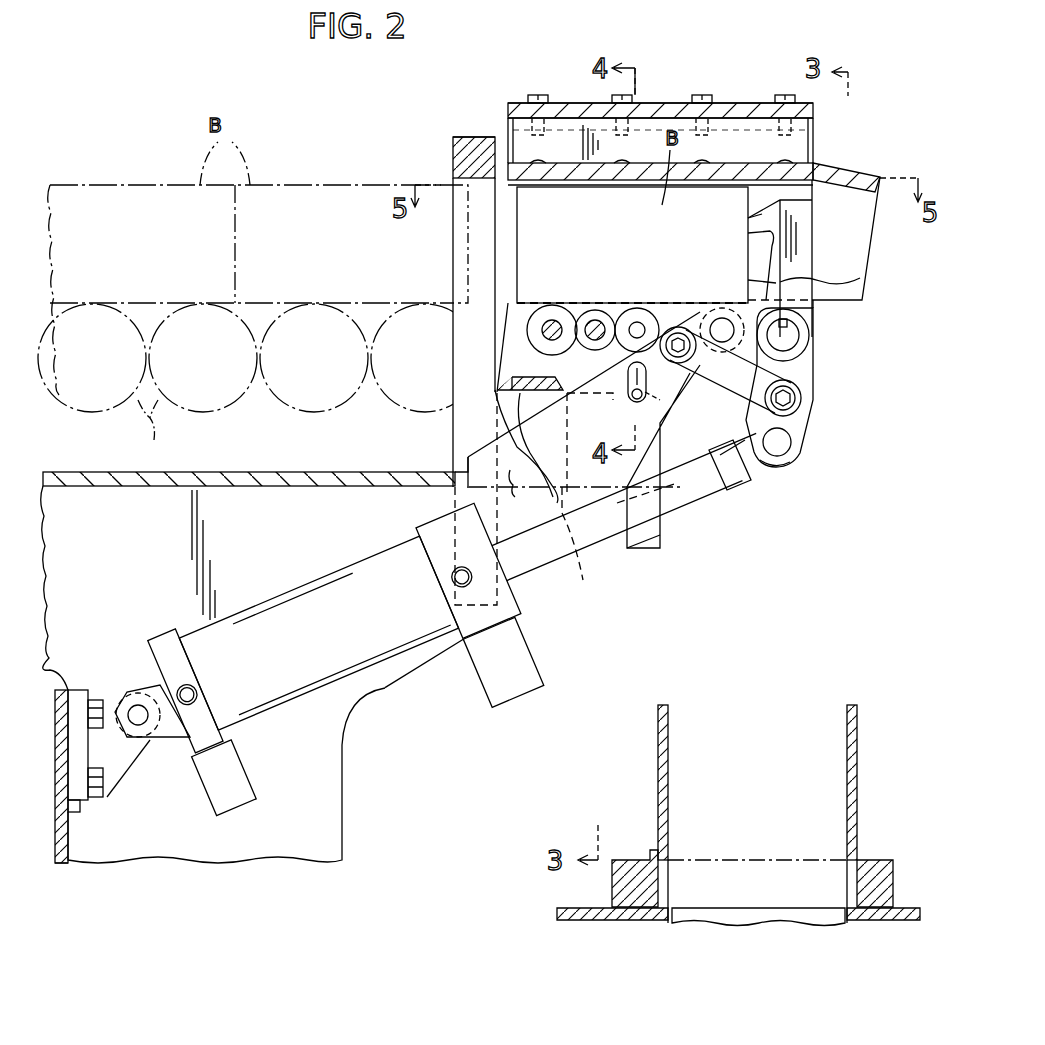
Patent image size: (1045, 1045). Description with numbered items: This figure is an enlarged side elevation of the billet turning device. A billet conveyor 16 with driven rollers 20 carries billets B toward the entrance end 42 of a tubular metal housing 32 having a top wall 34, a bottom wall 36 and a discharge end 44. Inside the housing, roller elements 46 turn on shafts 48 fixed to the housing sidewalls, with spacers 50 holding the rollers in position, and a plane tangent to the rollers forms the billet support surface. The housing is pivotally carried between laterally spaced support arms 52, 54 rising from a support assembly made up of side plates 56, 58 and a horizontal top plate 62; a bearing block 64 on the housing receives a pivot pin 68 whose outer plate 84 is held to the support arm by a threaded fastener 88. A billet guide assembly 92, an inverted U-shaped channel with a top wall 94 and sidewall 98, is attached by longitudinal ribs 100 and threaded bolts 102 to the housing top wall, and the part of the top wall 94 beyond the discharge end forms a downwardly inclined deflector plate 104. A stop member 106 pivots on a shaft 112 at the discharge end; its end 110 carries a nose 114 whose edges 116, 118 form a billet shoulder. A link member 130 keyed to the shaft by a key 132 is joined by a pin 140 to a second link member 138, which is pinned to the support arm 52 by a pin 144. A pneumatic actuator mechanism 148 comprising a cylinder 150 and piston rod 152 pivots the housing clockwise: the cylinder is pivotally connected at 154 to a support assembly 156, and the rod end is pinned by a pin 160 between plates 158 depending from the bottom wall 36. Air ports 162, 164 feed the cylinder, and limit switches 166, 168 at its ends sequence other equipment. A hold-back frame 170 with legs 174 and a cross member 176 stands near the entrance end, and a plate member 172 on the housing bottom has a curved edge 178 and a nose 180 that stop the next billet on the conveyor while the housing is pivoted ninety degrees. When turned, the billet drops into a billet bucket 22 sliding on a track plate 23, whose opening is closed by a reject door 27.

The billet conveyor 16 is at (214, 422).
The rollers 20 is at (147, 428).
The billet bucket 22 is at (860, 778).
The conveyor track plate 23 is at (883, 922).
The door 27 is at (822, 925).
The tubular metal housing 32 is at (757, 96).
The top wall 34 is at (722, 102).
The bottom wall 36 is at (535, 400).
The entrance end 42 is at (500, 122).
The discharge end 44 is at (851, 142).
The roller elements 46 is at (595, 318).
The shafts 48 is at (637, 318).
The spacers 50 is at (550, 318).
The support arm 52 is at (662, 530).
The support arm 54 is at (665, 452).
The side plate 56 is at (630, 552).
The side plate 58 is at (344, 822).
The horizontal top plate 62 is at (307, 470).
The bearing block 64 is at (612, 402).
The pivot pin 68 is at (627, 382).
The radially extending plate 84 is at (648, 388).
The threaded fastener 88 is at (652, 410).
The billet guide assembly 92 is at (573, 149).
The top wall 94 is at (650, 185).
The sidewall 98 is at (760, 188).
The longitudinally extending ribs 100 is at (647, 130).
The threaded bolts 102 is at (538, 93).
The deflector plate 104 is at (870, 180).
The stop member 106 is at (832, 260).
The end 110 is at (815, 206).
The pivotal shaft 112 is at (798, 337).
The nose 114 is at (752, 218).
The edge 116 is at (750, 232).
The edge 118 is at (758, 258).
The link member 130 is at (815, 358).
The key 132 is at (800, 325).
The second link member 138 is at (735, 487).
The pin 140 is at (805, 398).
The pin 144 is at (672, 322).
The pneumatic piston and cylinder actuator mechanism 148 is at (378, 707).
The cylinder 150 is at (316, 692).
The piston rod 152 is at (556, 578).
The pivotal interconnection 154 is at (132, 703).
The support assembly 156 is at (89, 677).
The plates 158 is at (775, 465).
The pin 160 is at (793, 442).
The air port 162 is at (200, 690).
The air port 164 is at (452, 578).
The limit switch 166 is at (240, 803).
The limit switch 168 is at (508, 702).
The inverted U-shaped frame component 170 is at (458, 141).
The plate member 172 is at (510, 388).
The legs 174 is at (466, 248).
The cross member 176 is at (472, 136).
The curved edge 178 is at (518, 497).
The nose 180 is at (577, 560).